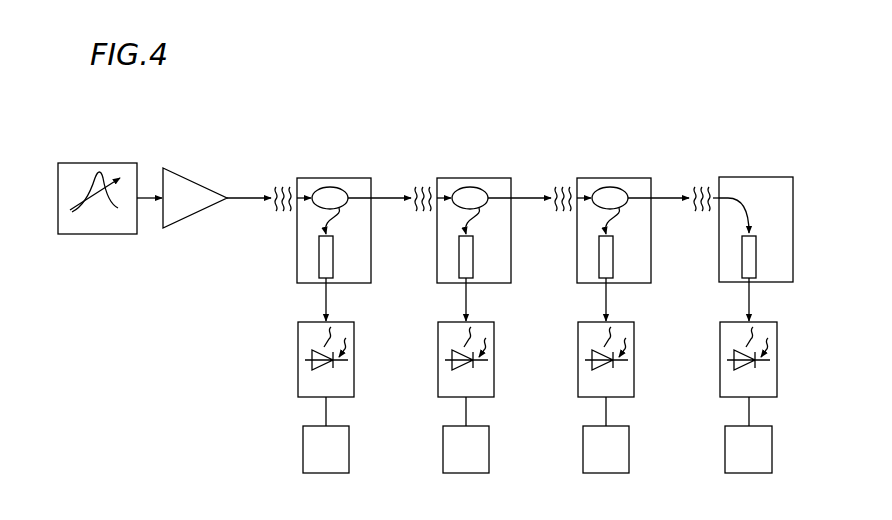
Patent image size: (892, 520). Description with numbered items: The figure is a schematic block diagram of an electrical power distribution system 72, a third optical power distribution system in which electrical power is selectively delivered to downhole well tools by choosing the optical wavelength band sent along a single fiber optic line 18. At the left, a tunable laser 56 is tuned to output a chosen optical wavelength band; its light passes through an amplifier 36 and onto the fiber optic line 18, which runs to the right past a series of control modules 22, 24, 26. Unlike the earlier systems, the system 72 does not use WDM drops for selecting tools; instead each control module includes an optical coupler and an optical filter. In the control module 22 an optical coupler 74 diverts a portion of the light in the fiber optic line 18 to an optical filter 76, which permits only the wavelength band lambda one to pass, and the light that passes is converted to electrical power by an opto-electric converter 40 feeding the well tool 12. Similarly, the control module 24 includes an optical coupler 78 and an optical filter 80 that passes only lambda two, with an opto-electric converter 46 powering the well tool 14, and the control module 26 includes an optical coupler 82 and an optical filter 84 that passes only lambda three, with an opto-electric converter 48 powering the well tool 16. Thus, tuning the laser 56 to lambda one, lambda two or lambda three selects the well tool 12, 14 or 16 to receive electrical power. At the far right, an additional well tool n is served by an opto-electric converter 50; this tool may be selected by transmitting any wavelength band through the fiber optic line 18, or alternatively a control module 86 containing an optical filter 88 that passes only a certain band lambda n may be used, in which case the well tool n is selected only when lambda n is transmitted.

The electrical power distribution system 72 is at (543, 81).
The tunable laser 56 is at (87, 163).
The optical amplifier 36 is at (199, 184).
The fiber optic line 18 is at (668, 196).
The control module 22 is at (335, 194).
The control module 24 is at (479, 209).
The control module 26 is at (619, 210).
The control module 86 is at (786, 186).
The optical coupler 74 is at (338, 188).
The optical coupler 78 is at (469, 188).
The optical coupler 82 is at (606, 188).
The optical filter 76 is at (319, 253).
The optical filter 80 is at (459, 262).
The optical filter 84 is at (599, 262).
The optical filter 88 is at (757, 240).
The opto-electric converter 40 is at (298, 378).
The opto-electric converter 46 is at (438, 365).
The opto-electric converter 48 is at (578, 375).
The opto-electric converter 50 is at (720, 370).
The well tool 12 is at (340, 466).
The well tool 14 is at (480, 466).
The well tool 16 is at (620, 466).
The well tool n is at (758, 466).